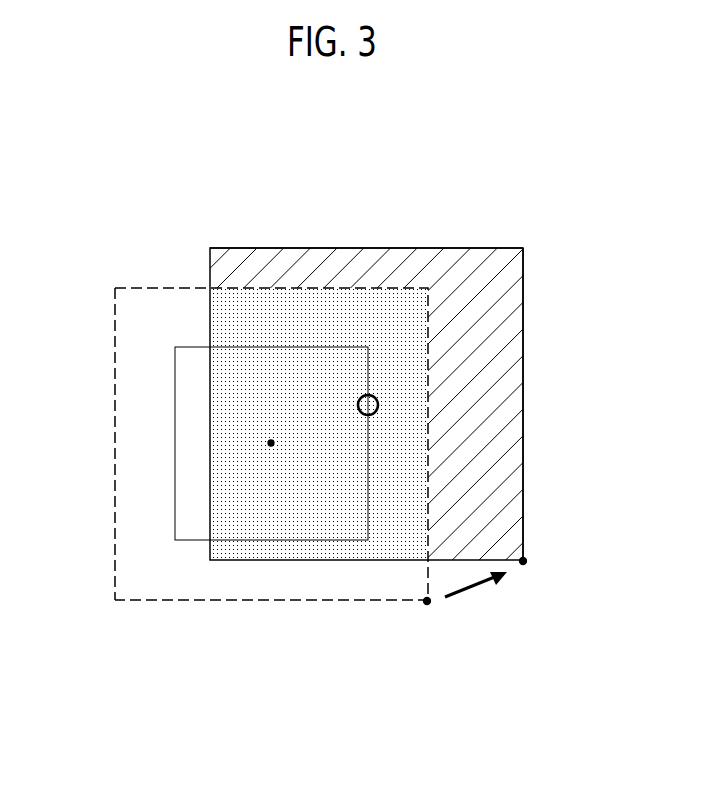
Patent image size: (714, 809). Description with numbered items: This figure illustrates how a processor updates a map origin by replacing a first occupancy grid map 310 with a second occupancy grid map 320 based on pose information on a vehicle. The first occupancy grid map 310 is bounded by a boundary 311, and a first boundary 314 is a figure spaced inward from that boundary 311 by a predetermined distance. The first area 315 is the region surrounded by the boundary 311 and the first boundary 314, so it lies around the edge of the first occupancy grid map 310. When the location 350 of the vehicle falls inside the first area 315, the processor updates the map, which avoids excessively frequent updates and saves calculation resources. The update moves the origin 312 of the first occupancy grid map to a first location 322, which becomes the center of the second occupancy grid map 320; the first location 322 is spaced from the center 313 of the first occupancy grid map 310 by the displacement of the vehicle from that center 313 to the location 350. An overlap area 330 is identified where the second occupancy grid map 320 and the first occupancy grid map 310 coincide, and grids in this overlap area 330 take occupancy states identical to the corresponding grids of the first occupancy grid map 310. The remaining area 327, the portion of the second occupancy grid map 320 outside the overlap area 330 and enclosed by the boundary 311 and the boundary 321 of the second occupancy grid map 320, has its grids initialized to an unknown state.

The first occupancy grid map 310 is at (183, 611).
The boundary of the first occupancy grid map 311 is at (113, 342).
The origin of the first occupancy grid map 312 is at (428, 605).
The center of the first occupancy grid map 313 is at (270, 444).
The first boundary 314 is at (175, 398).
The first area 315 is at (124, 488).
The second occupancy grid map 320 is at (403, 216).
The boundary of the second occupancy grid map 321 is at (482, 248).
The first location 322 is at (527, 561).
The remaining area 327 is at (320, 259).
The overlap area 330 is at (362, 562).
The location of the vehicle 350 is at (378, 405).